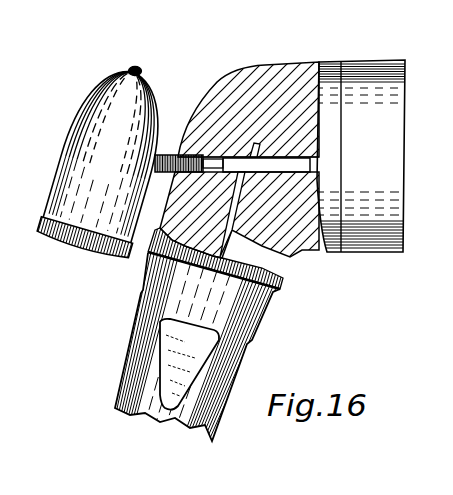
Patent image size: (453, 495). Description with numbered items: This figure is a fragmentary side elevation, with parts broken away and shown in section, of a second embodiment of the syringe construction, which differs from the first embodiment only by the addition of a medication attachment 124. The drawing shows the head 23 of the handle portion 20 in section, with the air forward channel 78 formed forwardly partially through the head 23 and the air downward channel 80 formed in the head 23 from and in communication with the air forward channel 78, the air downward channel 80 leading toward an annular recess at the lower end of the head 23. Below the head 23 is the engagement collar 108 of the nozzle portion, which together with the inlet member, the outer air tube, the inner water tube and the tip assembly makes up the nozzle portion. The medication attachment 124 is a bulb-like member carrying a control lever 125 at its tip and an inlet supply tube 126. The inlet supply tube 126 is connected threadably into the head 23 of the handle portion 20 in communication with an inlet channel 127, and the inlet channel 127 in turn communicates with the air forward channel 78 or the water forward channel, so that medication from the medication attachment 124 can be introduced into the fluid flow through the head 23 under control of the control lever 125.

The handle portion 20 is at (385, 58).
The head 23 is at (263, 67).
The air forward channel 78 is at (283, 176).
The air downward channel 80 is at (236, 223).
The engagement collar 108 is at (143, 352).
The medication attachment 124 is at (90, 132).
The control lever 125 is at (135, 66).
The inlet supply tube 126 is at (165, 155).
The inlet channel 127 is at (218, 157).